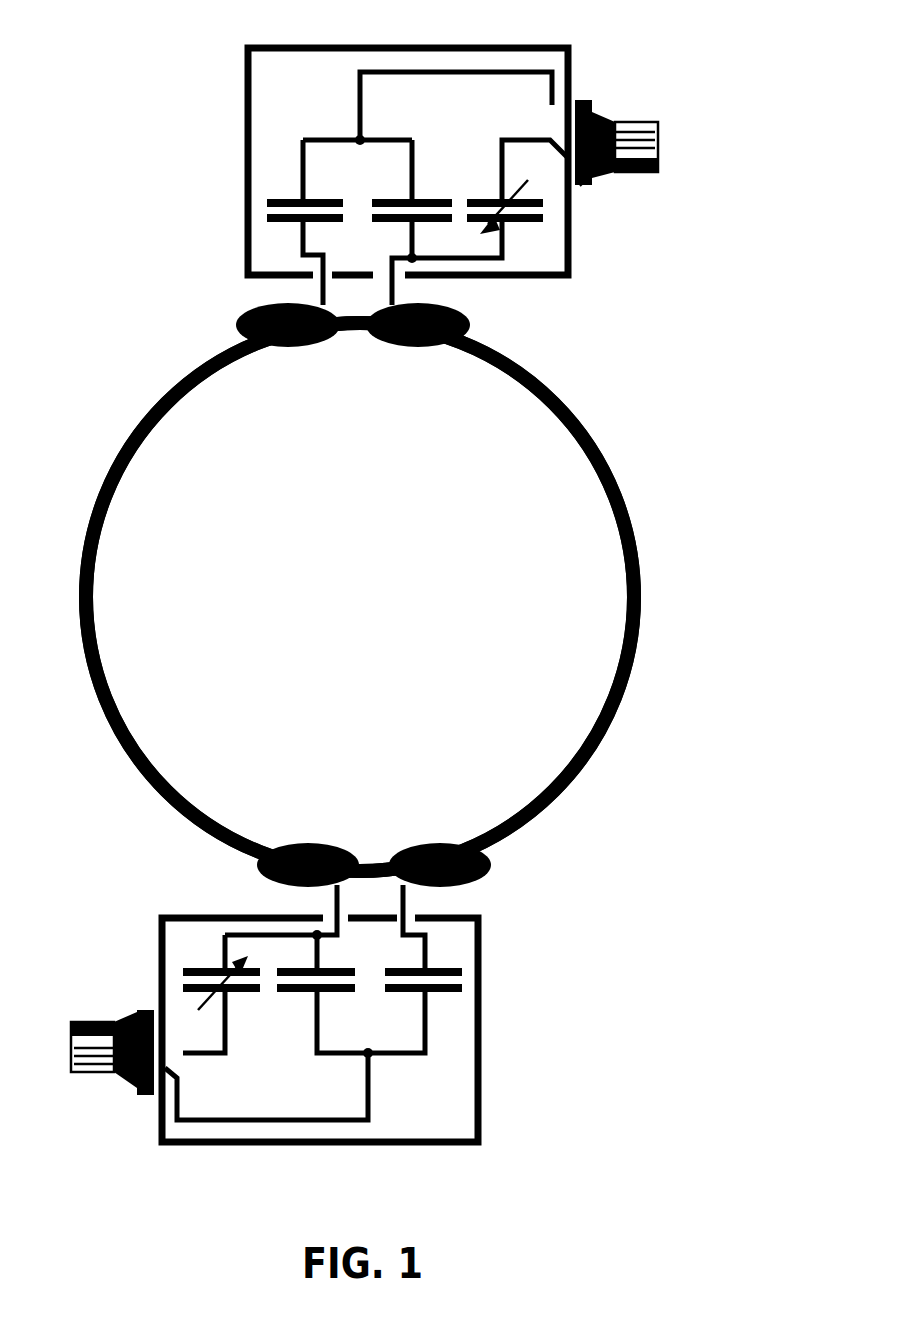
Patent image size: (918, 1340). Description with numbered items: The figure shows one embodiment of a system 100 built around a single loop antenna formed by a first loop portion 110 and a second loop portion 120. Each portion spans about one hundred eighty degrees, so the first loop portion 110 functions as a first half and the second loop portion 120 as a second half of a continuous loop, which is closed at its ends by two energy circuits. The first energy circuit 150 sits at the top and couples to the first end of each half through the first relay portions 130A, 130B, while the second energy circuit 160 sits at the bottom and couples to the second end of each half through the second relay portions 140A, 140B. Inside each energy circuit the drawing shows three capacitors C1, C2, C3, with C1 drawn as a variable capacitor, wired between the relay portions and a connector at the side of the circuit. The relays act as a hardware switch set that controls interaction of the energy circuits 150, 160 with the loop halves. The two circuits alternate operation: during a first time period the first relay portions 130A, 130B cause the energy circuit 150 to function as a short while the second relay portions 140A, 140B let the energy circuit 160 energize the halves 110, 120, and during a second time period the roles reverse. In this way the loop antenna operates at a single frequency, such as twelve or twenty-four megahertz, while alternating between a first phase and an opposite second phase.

The system 100 is at (690, 38).
The first loop portion 110 is at (78, 605).
The second loop portion 120 is at (642, 610).
The first relay portion 130A is at (238, 322).
The first relay portion 130B is at (420, 347).
The second relay portion 140A is at (300, 845).
The second relay portion 140B is at (490, 867).
The energy circuit 150 is at (568, 48).
The energy circuit 160 is at (478, 1020).
The variable capacitor C1 is at (363, 595).
The capacitor C2 is at (364, 595).
The capacitor C3 is at (364, 595).